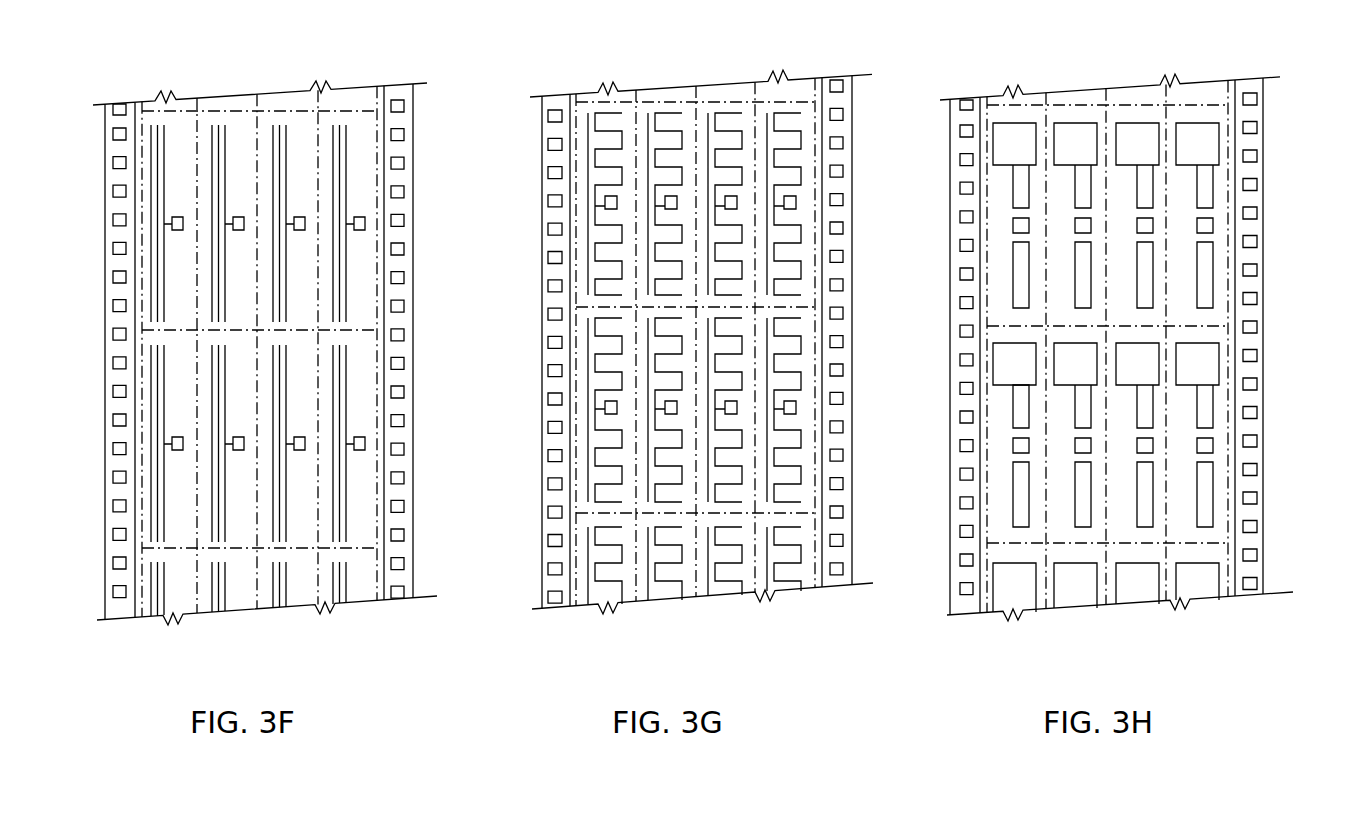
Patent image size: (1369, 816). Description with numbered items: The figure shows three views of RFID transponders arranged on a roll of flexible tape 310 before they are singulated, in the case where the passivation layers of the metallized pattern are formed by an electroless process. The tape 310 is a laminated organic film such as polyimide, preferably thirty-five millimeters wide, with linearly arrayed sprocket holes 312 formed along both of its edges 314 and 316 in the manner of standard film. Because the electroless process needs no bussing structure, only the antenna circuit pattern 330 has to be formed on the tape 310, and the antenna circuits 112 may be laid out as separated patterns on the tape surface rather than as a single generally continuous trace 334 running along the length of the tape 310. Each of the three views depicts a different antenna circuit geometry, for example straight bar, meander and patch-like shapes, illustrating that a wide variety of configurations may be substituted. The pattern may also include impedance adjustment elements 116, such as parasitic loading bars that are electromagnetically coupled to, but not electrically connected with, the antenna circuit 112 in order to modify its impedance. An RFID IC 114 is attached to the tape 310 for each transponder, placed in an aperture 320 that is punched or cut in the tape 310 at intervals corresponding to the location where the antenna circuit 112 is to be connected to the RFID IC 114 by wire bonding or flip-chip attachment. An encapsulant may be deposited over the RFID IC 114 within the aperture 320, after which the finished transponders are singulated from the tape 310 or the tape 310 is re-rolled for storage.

In FIG. 3F, the flex tape 310 is at (340, 97).
In FIG. 3G, the flex tape 310 is at (780, 92).
In FIG. 3H, the flex tape 310 is at (1197, 88).
In FIG. 3F, the sprocket holes 312 is at (400, 133).
In FIG. 3G, the sprocket holes 312 is at (838, 116).
In FIG. 3H, the sprocket holes 312 is at (962, 130).
In FIG. 3F, the first edge of tape 314 is at (102, 137).
In FIG. 3G, the first edge of tape 314 is at (538, 125).
In FIG. 3H, the first edge of tape 314 is at (949, 198).
In FIG. 3F, the second edge of tape 316 is at (413, 165).
In FIG. 3G, the second edge of tape 316 is at (852, 157).
In FIG. 3H, the second edge of tape 316 is at (1263, 153).
In FIG. 3F, the aperture 320 is at (362, 222).
In FIG. 3G, the aperture 320 is at (792, 204).
In FIG. 3F, the antenna circuit pattern 330 is at (345, 285).
In FIG. 3G, the antenna circuit pattern 330 is at (785, 260).
In FIG. 3H, the antenna circuit pattern 330 is at (1203, 192).
In FIG. 3F, the antenna circuit trace 334 is at (345, 382).
In FIG. 3G, the antenna circuit trace 334 is at (585, 385).
In FIG. 3H, the antenna circuit trace 334 is at (1207, 407).
In FIG. 3F, the antenna circuit 112 is at (157, 192).
In FIG. 3G, the antenna circuit 112 is at (597, 185).
In FIG. 3H, the antenna circuit 112 is at (1017, 397).
In FIG. 3F, the RFID IC 114 is at (168, 229).
In FIG. 3G, the RFID IC 114 is at (604, 208).
In FIG. 3H, the RFID IC 114 is at (1016, 446).
In FIG. 3F, the impedance adjustment element 116 is at (150, 267).
In FIG. 3G, the impedance adjustment element 116 is at (590, 262).
In FIG. 3H, the impedance adjustment element 116 is at (1020, 476).